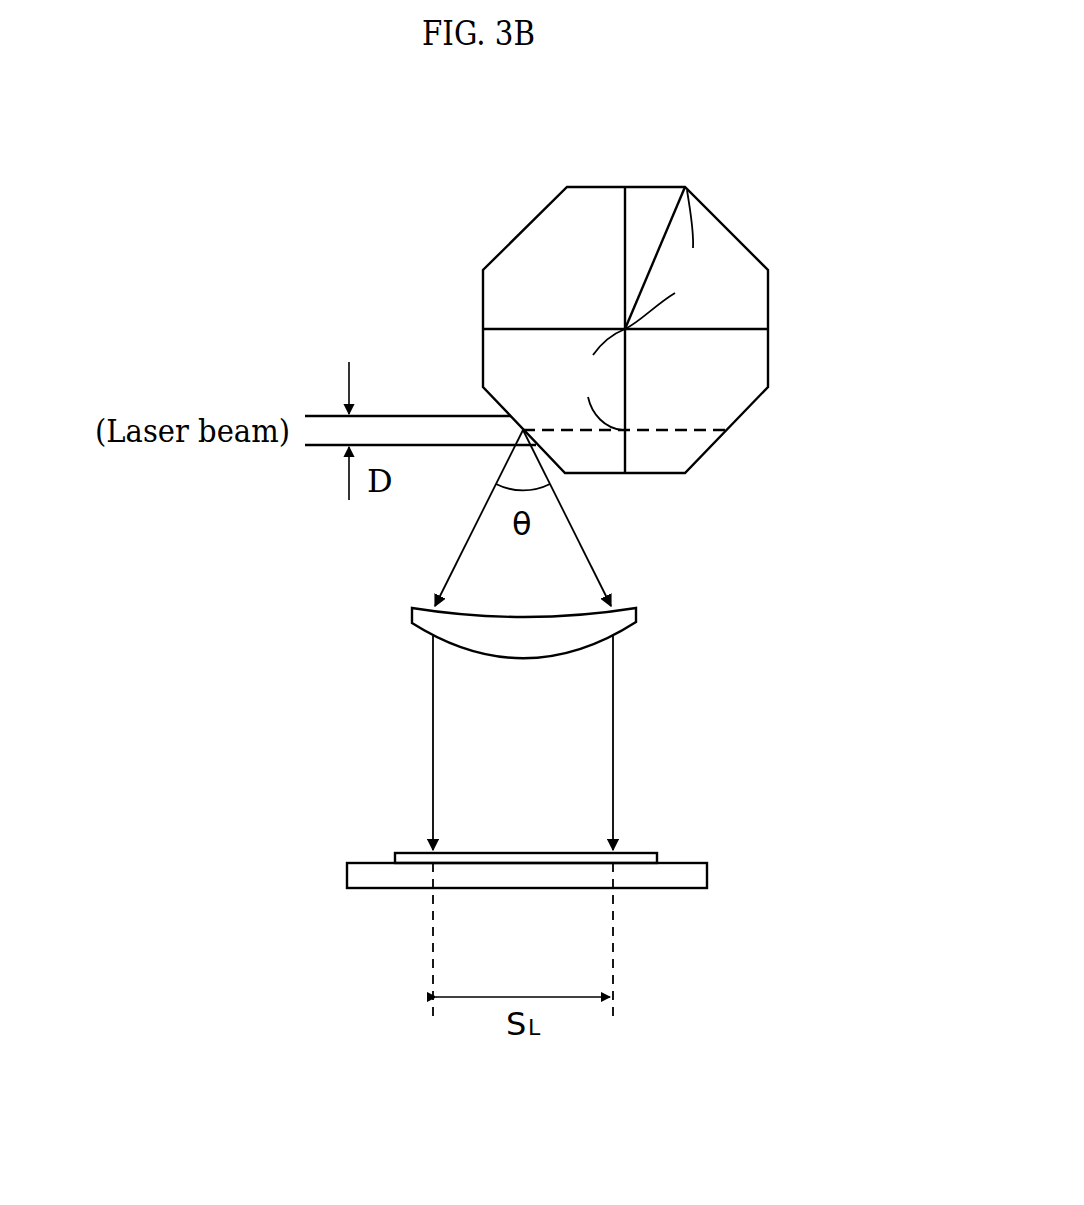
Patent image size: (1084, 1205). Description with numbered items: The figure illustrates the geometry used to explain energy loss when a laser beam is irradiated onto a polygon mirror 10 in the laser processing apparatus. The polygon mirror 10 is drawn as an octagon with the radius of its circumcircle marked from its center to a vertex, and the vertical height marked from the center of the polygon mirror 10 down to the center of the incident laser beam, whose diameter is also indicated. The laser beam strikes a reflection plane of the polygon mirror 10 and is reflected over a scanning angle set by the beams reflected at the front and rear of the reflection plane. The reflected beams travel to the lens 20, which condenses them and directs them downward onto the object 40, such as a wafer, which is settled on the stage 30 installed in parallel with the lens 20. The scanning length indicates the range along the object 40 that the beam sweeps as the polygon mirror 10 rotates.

The polygon mirror 10 is at (728, 205).
The lens 20 is at (636, 612).
The stage 30 is at (693, 878).
The object 40 is at (640, 853).